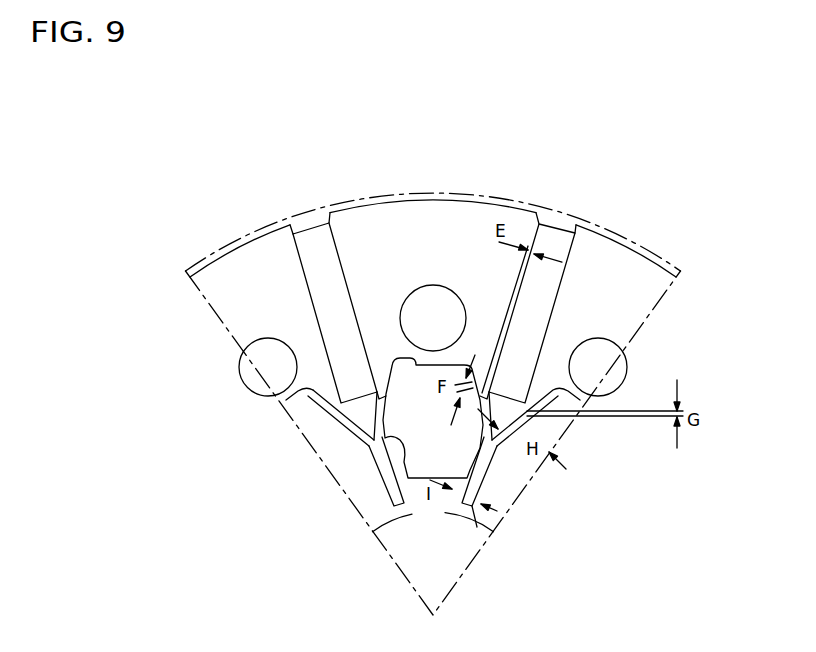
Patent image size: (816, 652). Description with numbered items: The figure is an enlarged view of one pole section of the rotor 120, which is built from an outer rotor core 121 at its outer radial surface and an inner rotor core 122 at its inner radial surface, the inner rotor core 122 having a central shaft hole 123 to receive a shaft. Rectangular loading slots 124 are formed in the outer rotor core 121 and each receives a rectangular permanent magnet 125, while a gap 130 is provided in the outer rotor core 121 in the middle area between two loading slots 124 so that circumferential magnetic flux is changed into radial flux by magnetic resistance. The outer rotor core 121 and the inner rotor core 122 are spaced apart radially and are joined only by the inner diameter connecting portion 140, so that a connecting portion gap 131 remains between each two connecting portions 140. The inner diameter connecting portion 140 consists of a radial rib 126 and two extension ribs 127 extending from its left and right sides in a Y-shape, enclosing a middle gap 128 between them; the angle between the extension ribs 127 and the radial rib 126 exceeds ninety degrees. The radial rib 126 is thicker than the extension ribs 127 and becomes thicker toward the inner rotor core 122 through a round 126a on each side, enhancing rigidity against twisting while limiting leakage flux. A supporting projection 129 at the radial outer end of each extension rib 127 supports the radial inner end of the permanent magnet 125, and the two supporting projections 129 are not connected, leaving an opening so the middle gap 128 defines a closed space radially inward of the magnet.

The rotor 120 is at (587, 212).
The outer rotor core 121 is at (625, 260).
The inner rotor core 122 is at (486, 518).
The shaft hole 123 is at (486, 518).
The loading slot 124 is at (567, 270).
The permanent magnet 125 is at (540, 297).
The radial rib 126 is at (377, 470).
The round 126a is at (525, 480).
The extension rib 127 is at (367, 450).
The middle gap 128 is at (367, 418).
The supporting projection 129 is at (313, 390).
The gap 130 is at (428, 285).
The connecting portion gap 131 is at (512, 436).
The inner diameter connecting portion 140 is at (550, 456).